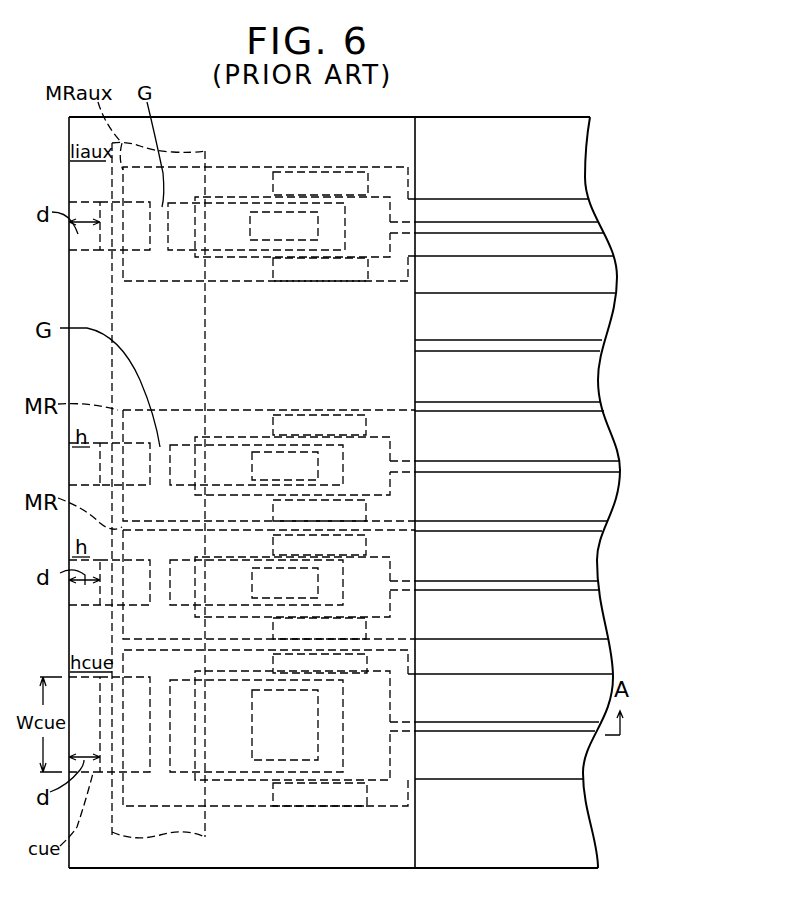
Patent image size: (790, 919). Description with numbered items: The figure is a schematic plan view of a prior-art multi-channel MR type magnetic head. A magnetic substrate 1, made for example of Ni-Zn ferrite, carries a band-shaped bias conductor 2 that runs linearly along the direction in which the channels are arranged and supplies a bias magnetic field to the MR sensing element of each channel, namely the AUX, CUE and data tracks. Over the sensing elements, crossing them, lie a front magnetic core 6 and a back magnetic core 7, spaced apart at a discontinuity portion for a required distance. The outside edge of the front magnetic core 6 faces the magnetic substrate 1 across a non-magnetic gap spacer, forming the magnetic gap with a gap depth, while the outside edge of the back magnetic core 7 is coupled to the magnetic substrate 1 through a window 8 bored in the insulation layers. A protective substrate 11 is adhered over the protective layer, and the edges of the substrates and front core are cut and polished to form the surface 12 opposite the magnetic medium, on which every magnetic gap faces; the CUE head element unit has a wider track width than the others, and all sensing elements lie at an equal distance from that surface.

The magnetic substrate 1 is at (595, 838).
The bias conductor 2 is at (128, 827).
The front magnetic core 6 is at (121, 787).
The back magnetic core 7 is at (250, 800).
The window 8 is at (285, 462).
The protective substrate 11 is at (415, 843).
The surface opposite to the magnetic medium 12 is at (70, 443).